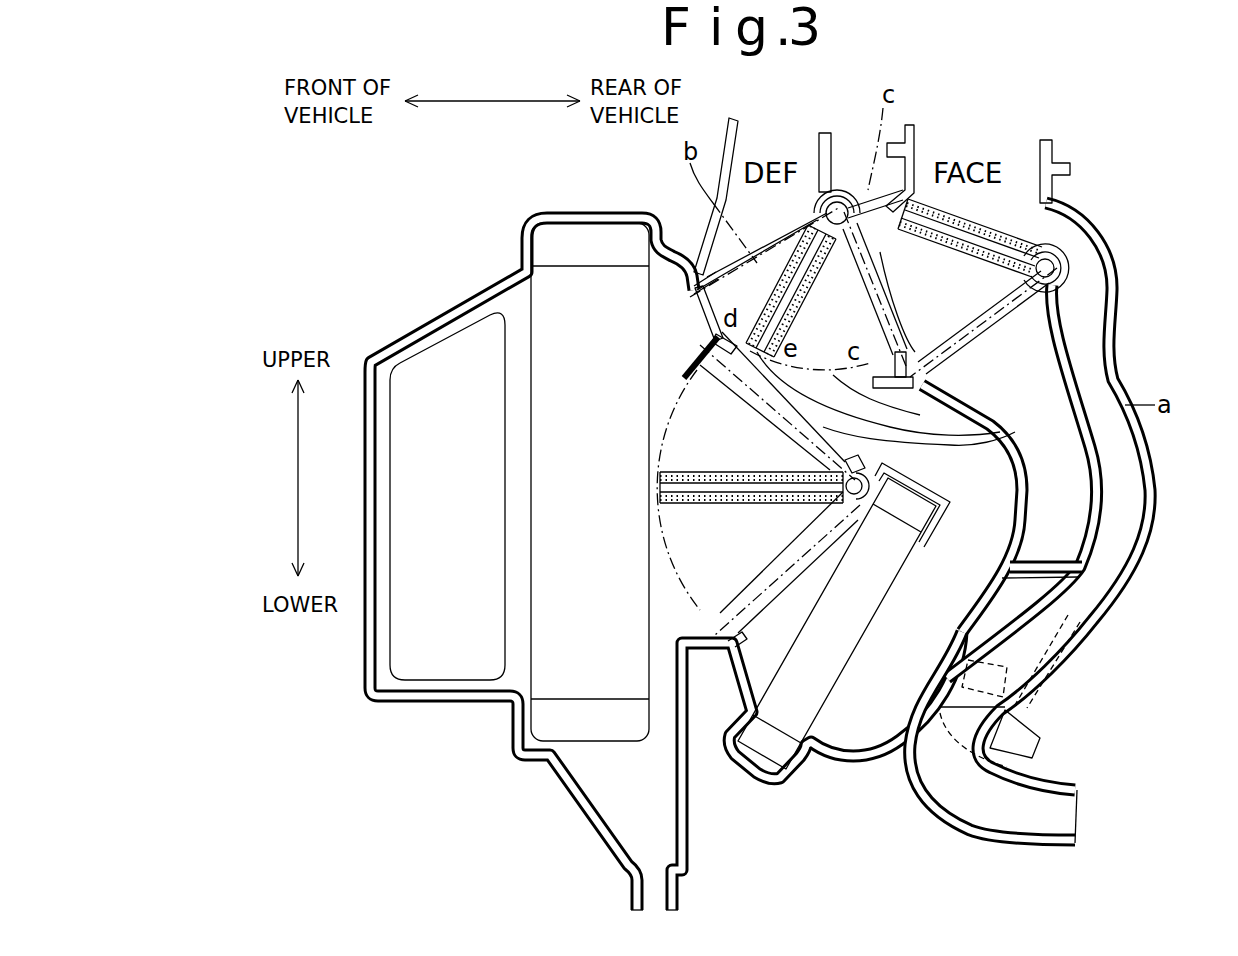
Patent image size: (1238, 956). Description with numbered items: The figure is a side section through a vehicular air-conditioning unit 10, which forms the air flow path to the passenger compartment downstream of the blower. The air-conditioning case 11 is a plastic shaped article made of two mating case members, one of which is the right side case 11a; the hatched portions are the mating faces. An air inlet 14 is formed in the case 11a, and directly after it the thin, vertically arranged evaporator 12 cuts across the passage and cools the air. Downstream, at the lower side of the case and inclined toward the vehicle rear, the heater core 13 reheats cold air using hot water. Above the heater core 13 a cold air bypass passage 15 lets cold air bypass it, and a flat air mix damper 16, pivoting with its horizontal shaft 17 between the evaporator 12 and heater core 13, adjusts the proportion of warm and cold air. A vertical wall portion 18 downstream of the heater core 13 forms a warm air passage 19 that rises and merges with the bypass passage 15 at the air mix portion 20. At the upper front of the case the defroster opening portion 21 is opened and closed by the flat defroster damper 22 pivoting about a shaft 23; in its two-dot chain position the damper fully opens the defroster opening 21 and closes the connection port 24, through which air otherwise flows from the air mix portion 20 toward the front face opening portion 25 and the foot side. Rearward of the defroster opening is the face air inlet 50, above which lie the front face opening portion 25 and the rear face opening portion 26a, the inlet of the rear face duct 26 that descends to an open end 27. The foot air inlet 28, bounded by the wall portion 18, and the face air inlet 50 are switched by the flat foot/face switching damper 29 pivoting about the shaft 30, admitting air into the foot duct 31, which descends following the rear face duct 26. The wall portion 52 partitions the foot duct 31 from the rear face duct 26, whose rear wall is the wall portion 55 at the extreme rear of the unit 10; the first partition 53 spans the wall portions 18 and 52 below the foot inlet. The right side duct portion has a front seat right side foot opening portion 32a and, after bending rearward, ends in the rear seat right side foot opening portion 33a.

The air-conditioning unit 10 is at (627, 206).
The air-conditioning case 11 is at (530, 200).
The right side case 11a is at (555, 169).
The evaporator 12 is at (568, 676).
The heater core 13 is at (822, 675).
The air inlet 14 is at (427, 343).
The cold air bypass passage 15 is at (1090, 413).
The air mix damper 16 is at (717, 497).
The shaft 17 is at (1030, 465).
The wall portion 18 is at (1030, 537).
The warm air passage 19 is at (900, 633).
The air mix portion 20 is at (1107, 400).
The defroster opening portion 21 is at (767, 143).
The defroster damper 22 is at (797, 210).
The shaft 23 is at (847, 216).
The connection port 24 is at (920, 225).
The front face opening portion 25 is at (972, 147).
The rear face duct 26 is at (1123, 483).
The rear face opening portion 26a is at (1060, 230).
The open end 27 is at (1070, 823).
The foot air inlet 28 is at (1027, 323).
The foot/face switching damper 29 is at (1058, 236).
The shaft 30 is at (1062, 258).
The foot duct 31 is at (1060, 512).
The front seat right side foot opening portion 32a is at (1012, 686).
The rear seat right side foot opening portion 33a is at (1040, 755).
The face air inlet 50 is at (1008, 205).
The wall portion 52 is at (1060, 365).
The first partition 53 is at (1047, 575).
The wall portion 55 is at (1120, 278).